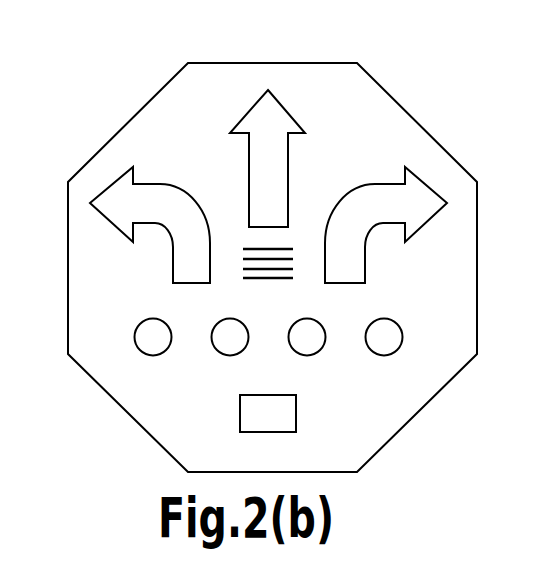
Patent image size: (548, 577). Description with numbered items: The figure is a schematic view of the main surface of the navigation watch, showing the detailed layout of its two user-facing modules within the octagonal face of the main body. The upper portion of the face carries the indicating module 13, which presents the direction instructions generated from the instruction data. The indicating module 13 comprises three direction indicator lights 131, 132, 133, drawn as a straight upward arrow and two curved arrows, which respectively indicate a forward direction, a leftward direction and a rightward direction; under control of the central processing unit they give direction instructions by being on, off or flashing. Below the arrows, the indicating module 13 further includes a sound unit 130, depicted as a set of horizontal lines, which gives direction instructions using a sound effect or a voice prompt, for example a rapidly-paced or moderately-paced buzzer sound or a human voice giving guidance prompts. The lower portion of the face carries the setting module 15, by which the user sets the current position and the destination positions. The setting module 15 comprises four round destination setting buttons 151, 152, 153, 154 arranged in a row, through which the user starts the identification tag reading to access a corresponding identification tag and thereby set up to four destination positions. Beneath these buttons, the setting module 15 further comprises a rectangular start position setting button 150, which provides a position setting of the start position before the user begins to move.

The indicating module 13 is at (250, 103).
The sound unit 130 is at (273, 280).
The direction indicator light 131 is at (276, 97).
The direction indicator light 132 is at (105, 180).
The direction indicator light 133 is at (431, 180).
The setting module 15 is at (371, 432).
The start position setting button 150 is at (282, 410).
The destination setting button 151 is at (165, 336).
The destination setting button 152 is at (238, 336).
The destination setting button 153 is at (302, 337).
The destination setting button 154 is at (376, 337).